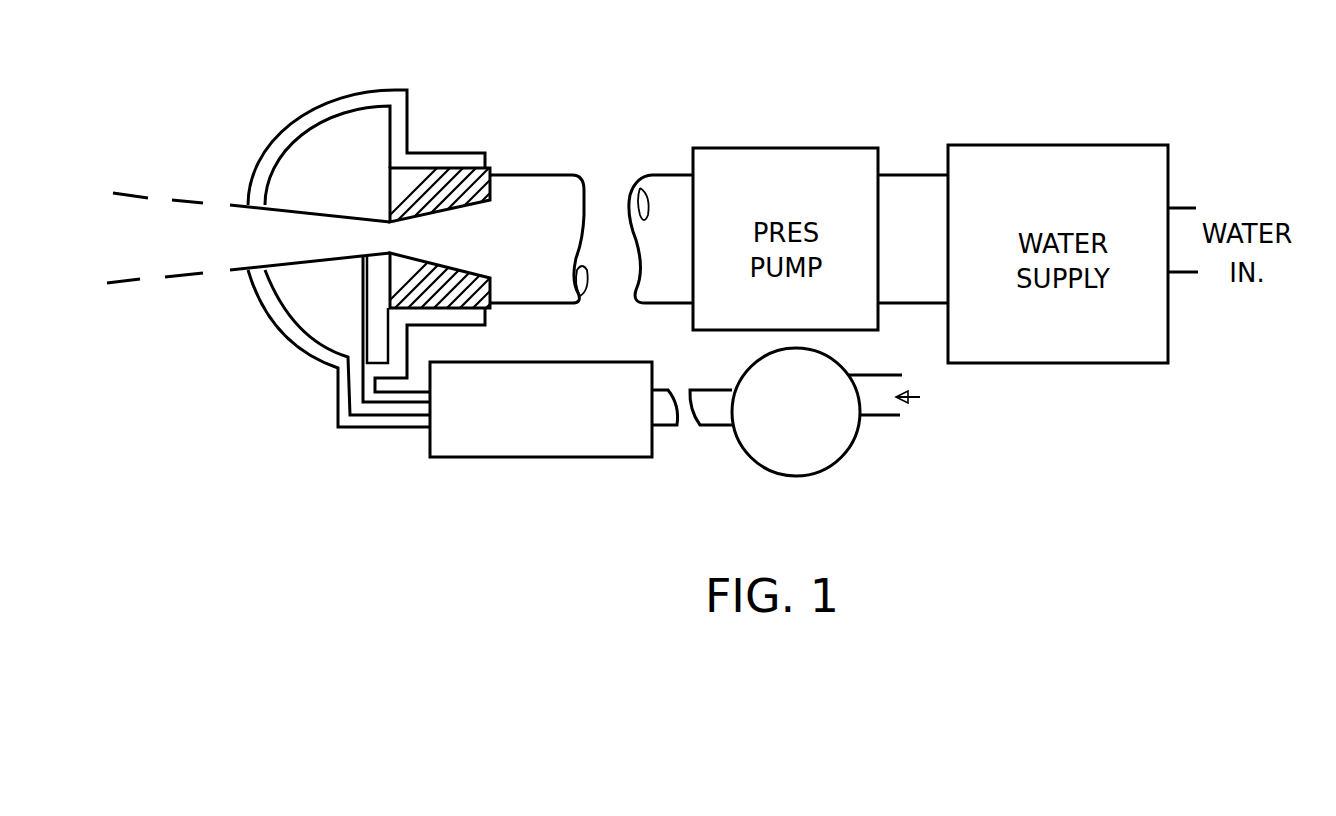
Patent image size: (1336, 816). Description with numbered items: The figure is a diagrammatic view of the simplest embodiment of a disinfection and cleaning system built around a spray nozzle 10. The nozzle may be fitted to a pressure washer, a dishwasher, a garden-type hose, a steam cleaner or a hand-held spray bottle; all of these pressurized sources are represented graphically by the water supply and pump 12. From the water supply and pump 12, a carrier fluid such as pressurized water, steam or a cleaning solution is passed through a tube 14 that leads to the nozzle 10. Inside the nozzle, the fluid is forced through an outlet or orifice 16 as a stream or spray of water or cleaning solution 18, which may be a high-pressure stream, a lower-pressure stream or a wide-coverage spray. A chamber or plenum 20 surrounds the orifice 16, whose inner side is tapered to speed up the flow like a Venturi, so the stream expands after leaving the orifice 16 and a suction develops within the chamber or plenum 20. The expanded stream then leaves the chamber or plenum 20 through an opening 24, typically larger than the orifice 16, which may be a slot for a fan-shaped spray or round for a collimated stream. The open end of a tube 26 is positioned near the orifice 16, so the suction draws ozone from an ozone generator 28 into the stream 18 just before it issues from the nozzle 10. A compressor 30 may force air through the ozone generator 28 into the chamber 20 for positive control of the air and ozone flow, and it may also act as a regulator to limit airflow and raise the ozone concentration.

The spray nozzle 10 is at (378, 73).
The water supply and pump 12 is at (913, 188).
The tube 14 is at (591, 191).
The outlet or orifice 16 is at (390, 222).
The water or cleaning solution stream 18 is at (203, 203).
The chamber or plenum 20 is at (287, 135).
The opening 24 is at (250, 274).
The tube 26 is at (327, 320).
The ozone generator 28 is at (498, 457).
The compressor 30 is at (820, 473).